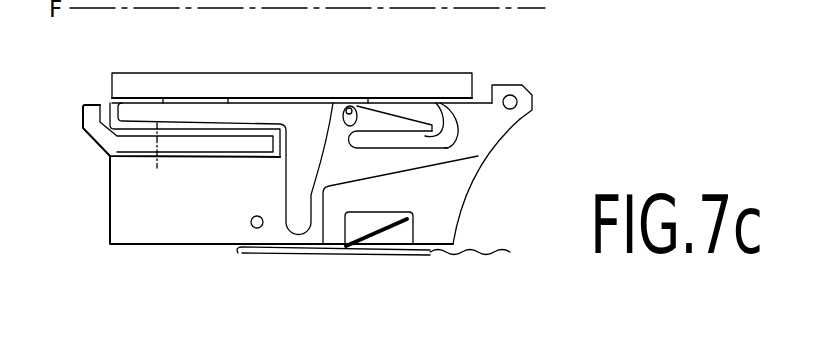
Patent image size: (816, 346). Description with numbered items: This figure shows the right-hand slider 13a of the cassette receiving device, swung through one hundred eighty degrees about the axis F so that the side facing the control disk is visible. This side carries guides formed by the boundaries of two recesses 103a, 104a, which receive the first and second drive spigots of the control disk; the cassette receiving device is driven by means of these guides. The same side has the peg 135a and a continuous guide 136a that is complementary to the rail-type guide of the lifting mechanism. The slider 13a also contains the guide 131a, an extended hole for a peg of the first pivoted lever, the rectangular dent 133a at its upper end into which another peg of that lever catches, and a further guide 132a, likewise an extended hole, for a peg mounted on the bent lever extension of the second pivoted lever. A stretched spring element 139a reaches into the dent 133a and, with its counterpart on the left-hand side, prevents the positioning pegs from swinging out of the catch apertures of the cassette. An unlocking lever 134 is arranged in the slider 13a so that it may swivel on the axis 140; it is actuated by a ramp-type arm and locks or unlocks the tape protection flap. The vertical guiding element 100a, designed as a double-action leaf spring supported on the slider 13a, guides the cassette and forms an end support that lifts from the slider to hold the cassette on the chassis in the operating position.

The first recess 103a is at (300, 123).
The continuous guide 136a is at (110, 101).
The guide 131a is at (343, 103).
The second recess 104a is at (434, 100).
The peg 135a is at (512, 108).
The unlocking lever 134 is at (97, 133).
The axis 140 is at (157, 168).
The right-hand slider 13a is at (181, 257).
The guide 132a is at (252, 227).
The rectangular dent 133a is at (400, 238).
The stretched spring element 139a is at (380, 234).
The vertical guiding element 100a is at (398, 257).